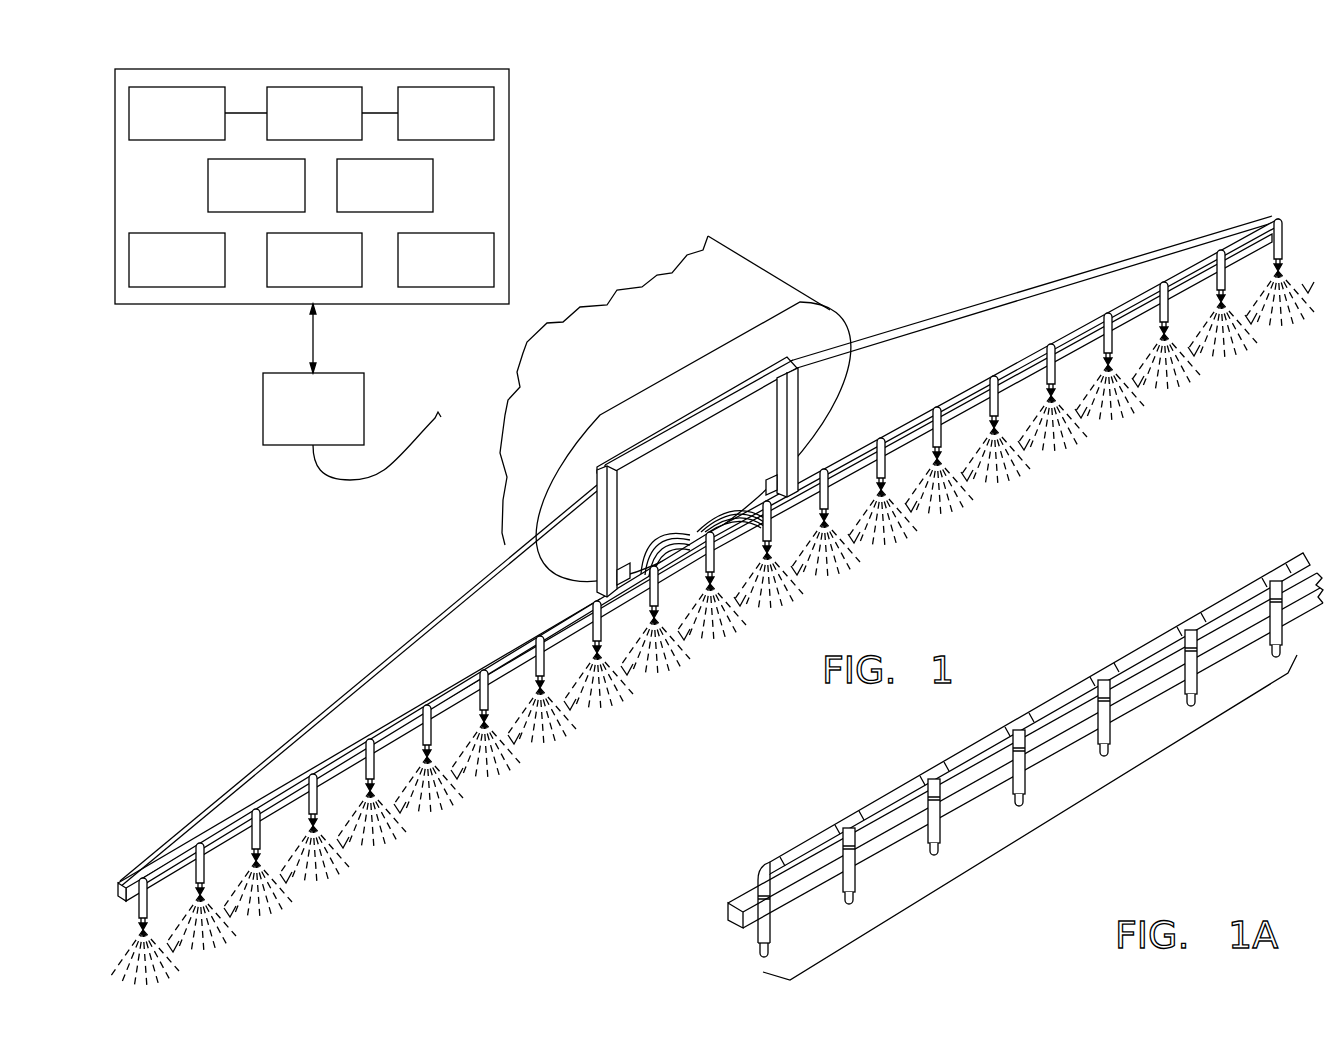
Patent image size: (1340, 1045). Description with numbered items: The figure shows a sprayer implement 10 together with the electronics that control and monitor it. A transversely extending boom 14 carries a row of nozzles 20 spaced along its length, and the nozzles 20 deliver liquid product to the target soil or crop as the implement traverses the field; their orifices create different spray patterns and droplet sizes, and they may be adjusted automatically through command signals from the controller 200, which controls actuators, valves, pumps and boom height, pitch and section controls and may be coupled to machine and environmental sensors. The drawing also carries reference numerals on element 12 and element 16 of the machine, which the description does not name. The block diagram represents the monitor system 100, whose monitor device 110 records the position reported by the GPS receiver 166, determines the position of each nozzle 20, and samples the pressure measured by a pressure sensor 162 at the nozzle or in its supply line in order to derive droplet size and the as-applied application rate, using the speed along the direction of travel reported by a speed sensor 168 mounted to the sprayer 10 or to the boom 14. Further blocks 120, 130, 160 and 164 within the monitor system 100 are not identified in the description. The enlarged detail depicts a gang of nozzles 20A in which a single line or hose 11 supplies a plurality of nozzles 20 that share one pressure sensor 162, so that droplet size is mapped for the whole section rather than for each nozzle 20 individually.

In FIG. 1, the sprayer implement 10 is at (712, 577).
In FIG. 1, the line or hose 11 is at (437, 697).
In FIG. 1A, the line or hose 11 is at (895, 793).
In FIG. 1, the tank 12 is at (783, 293).
In FIG. 1, the boom 14 is at (1020, 362).
In FIG. 1, the vehicle 16 is at (690, 173).
In FIG. 1, the nozzle 20 is at (978, 427).
In FIG. 1A, the gang of nozzles 20A is at (1100, 800).
In FIG. 1, the monitor system 100 is at (389, 186).
In FIG. 1, the monitor device 110 is at (177, 113).
In FIG. 1, the processor module 120 is at (314, 113).
In FIG. 1, the memory module 130 is at (446, 113).
In FIG. 1, the sensor module 160 is at (177, 260).
In FIG. 1, the pressure sensor 162 is at (314, 260).
In FIG. 1, the sensor module 164 is at (446, 260).
In FIG. 1, the GPS receiver 166 is at (256, 185).
In FIG. 1, the speed sensor 168 is at (385, 185).
In FIG. 1, the controller 200 is at (352, 392).